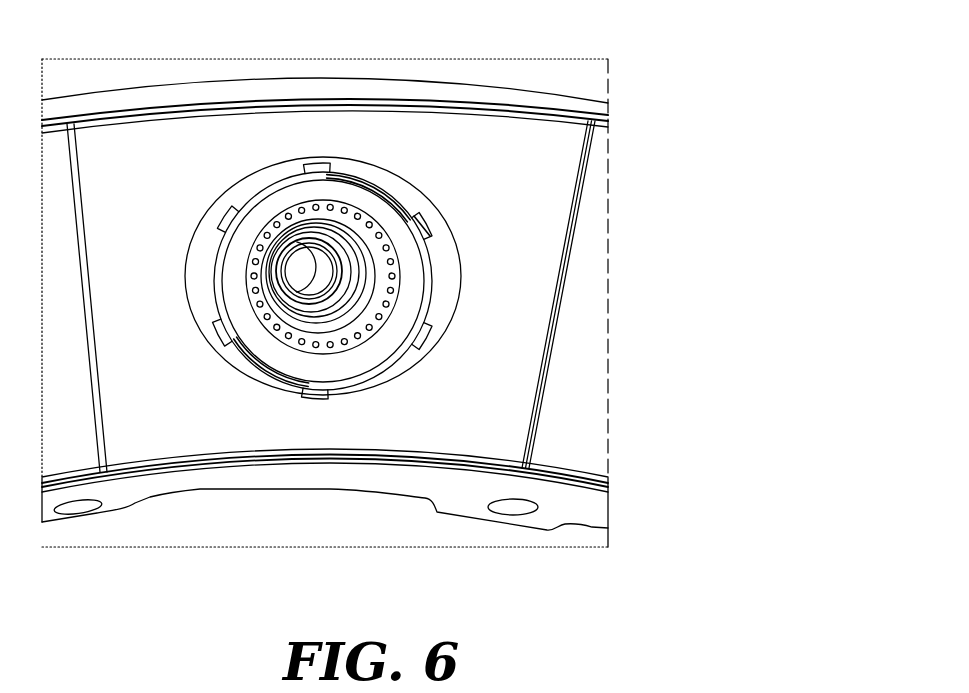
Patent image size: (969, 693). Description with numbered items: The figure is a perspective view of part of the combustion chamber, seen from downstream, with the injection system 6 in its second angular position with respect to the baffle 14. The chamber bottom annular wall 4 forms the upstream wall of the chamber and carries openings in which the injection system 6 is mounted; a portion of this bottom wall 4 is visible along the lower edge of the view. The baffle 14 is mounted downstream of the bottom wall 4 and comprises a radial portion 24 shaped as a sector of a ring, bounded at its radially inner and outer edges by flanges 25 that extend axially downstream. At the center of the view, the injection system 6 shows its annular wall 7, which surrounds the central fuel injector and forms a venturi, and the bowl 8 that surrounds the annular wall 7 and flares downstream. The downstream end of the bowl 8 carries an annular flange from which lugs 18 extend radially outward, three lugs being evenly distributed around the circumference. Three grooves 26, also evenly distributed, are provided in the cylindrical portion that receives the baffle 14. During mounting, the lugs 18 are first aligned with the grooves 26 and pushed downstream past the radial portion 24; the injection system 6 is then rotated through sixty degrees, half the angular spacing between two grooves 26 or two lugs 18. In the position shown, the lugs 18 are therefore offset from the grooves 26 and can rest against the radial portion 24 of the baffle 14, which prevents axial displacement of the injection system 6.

The chamber bottom annular wall 4 is at (563, 520).
The injection system 6 is at (363, 192).
The annular wall 7 is at (342, 282).
The bowl 8 is at (365, 322).
The baffle 14 is at (185, 147).
The lugs 18 is at (423, 222).
The radial portion 24 is at (185, 147).
The flanges 25 is at (493, 101).
The grooves 26 is at (340, 157).